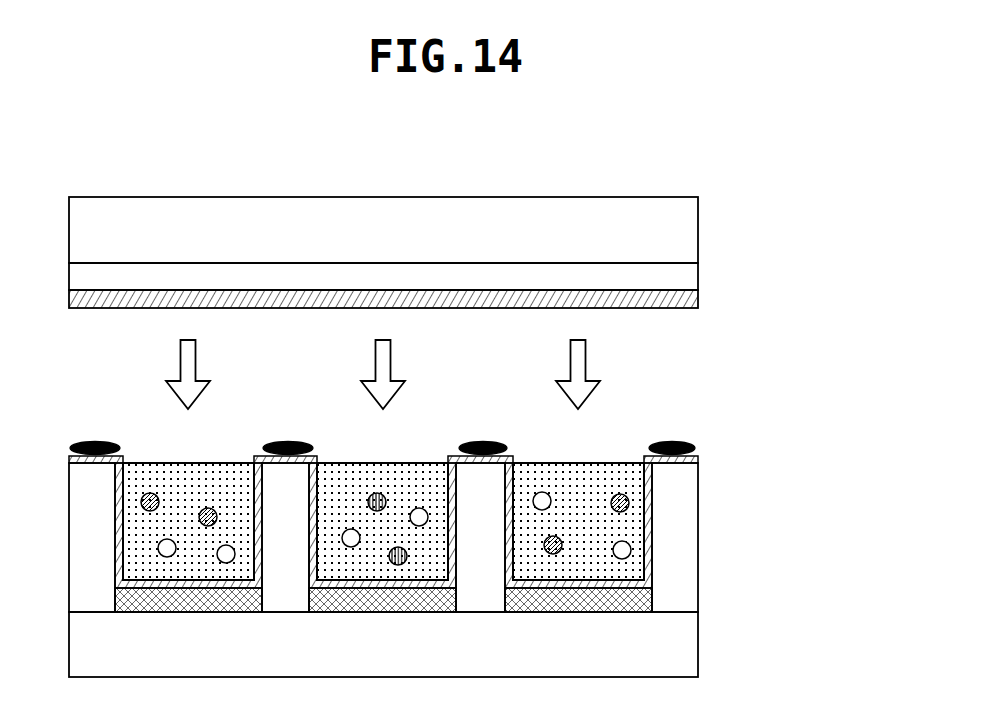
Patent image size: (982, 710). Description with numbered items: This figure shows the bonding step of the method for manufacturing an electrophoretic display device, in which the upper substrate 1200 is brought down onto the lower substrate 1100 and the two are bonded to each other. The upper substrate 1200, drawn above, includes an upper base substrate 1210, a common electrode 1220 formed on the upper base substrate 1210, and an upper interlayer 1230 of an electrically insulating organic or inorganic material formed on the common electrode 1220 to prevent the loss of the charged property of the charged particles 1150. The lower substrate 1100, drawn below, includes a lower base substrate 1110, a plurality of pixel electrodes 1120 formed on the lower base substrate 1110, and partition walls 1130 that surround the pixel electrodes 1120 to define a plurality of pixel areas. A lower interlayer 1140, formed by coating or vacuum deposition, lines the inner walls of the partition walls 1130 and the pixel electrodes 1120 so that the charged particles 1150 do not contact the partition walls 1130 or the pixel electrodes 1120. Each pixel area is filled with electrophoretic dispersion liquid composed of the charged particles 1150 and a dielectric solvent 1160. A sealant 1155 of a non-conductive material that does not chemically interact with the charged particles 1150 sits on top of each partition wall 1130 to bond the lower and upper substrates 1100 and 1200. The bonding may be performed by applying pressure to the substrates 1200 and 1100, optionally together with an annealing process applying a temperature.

The upper substrate 1200 is at (469, 254).
The upper base substrate 1210 is at (692, 233).
The common electrode 1220 is at (692, 271).
The upper interlayer 1230 is at (692, 299).
The lower substrate 1100 is at (468, 554).
The lower base substrate 1110 is at (690, 626).
The pixel electrodes 1120 is at (650, 596).
The partition walls 1130 is at (690, 562).
The lower interlayer 1140 is at (647, 536).
The charged particles 1150 is at (629, 503).
The sealant 1155 is at (431, 445).
The dielectric solvent 1160 is at (634, 486).